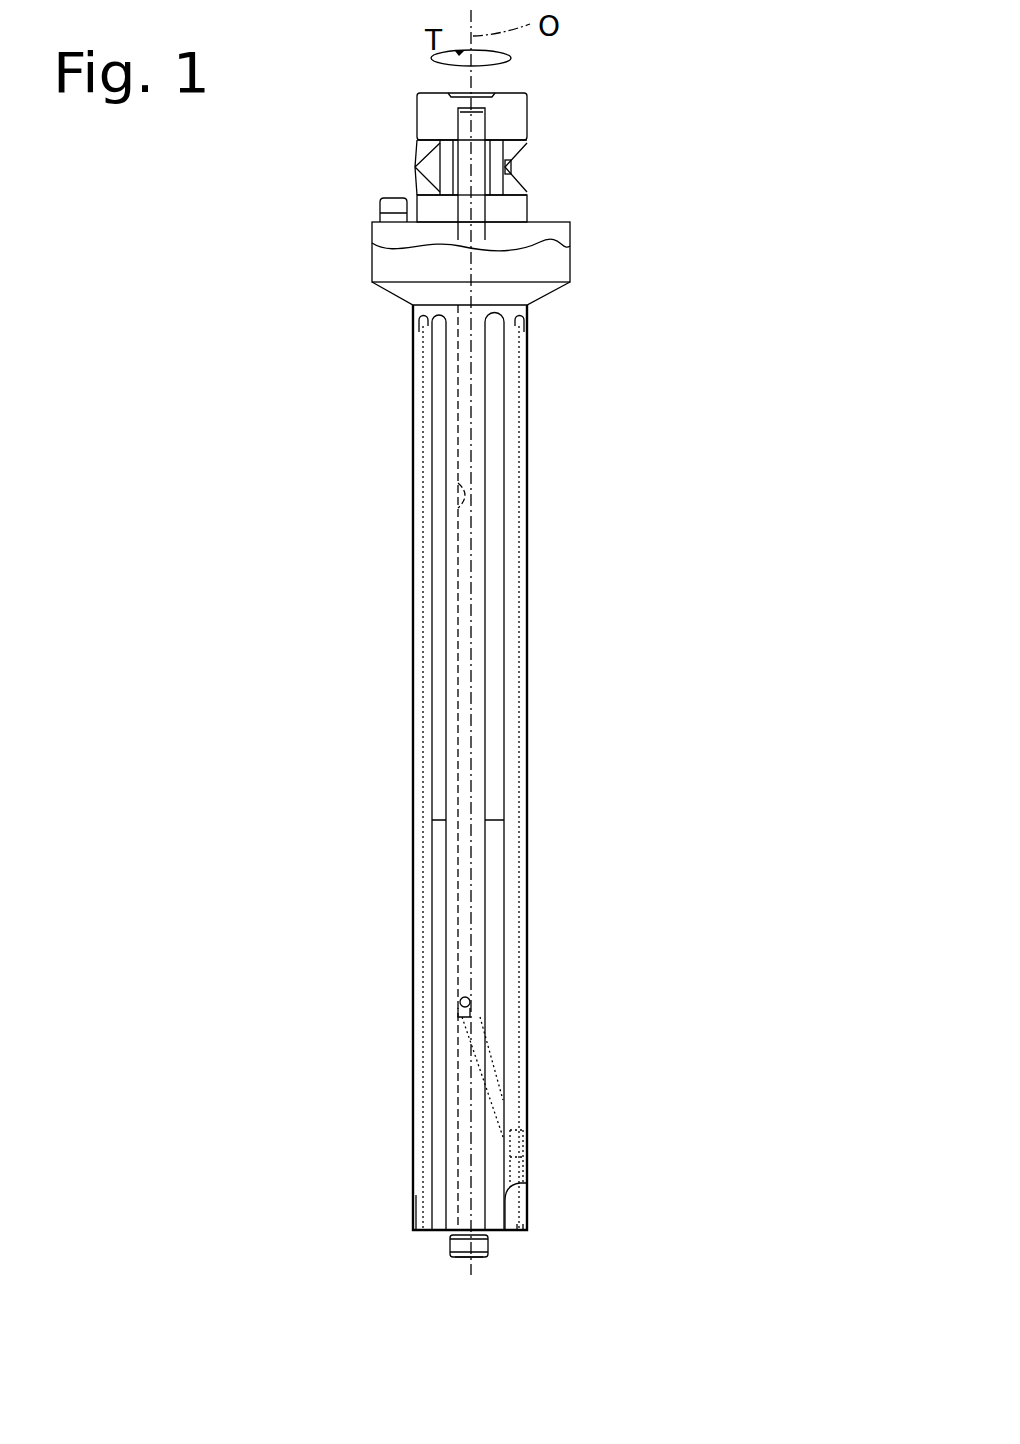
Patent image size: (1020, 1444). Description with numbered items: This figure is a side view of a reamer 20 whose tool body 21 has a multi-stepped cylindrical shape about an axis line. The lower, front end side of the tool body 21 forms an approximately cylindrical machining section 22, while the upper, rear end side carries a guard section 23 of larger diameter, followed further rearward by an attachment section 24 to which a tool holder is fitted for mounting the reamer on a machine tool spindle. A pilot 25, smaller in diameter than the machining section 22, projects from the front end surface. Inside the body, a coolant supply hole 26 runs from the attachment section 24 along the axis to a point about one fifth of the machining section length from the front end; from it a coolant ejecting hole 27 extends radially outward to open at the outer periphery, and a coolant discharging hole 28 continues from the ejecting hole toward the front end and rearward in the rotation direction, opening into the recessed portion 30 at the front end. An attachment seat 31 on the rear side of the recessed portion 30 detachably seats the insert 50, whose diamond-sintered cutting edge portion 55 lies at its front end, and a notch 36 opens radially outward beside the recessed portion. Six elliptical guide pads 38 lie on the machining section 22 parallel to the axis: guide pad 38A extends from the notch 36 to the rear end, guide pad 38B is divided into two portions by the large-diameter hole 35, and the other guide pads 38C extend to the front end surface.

The reamer 20 is at (717, 110).
The tool body 21 is at (747, 368).
The machining section 22 is at (578, 522).
The guard section 23 is at (570, 267).
The attachment section 24 is at (560, 167).
The pilot 25 is at (457, 1247).
The coolant supply hole 26 is at (458, 517).
The coolant ejecting hole 27 is at (463, 1020).
The coolant discharging hole 28 is at (503, 1100).
The recessed portion 30 is at (490, 1262).
The attachment seat 31 is at (603, 1208).
The large-diameter hole 35 is at (410, 1215).
The notch 36 is at (543, 1155).
The guide pads 38 is at (456, 772).
The guide pad 38A is at (526, 863).
The guide pad 38B is at (413, 645).
The guide pads 38C is at (432, 414).
The insert 50 is at (533, 1220).
The cutting edge portion 55 is at (512, 1233).